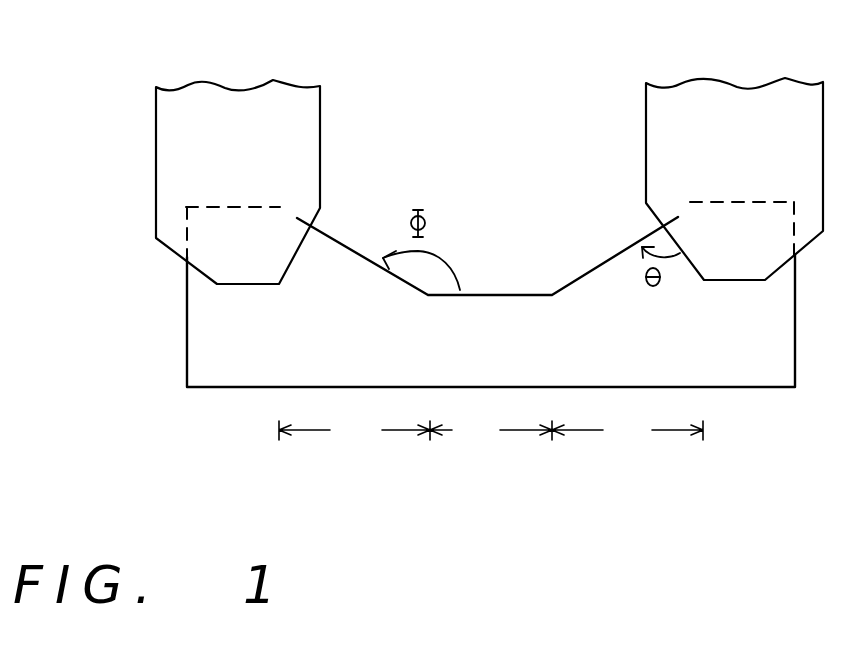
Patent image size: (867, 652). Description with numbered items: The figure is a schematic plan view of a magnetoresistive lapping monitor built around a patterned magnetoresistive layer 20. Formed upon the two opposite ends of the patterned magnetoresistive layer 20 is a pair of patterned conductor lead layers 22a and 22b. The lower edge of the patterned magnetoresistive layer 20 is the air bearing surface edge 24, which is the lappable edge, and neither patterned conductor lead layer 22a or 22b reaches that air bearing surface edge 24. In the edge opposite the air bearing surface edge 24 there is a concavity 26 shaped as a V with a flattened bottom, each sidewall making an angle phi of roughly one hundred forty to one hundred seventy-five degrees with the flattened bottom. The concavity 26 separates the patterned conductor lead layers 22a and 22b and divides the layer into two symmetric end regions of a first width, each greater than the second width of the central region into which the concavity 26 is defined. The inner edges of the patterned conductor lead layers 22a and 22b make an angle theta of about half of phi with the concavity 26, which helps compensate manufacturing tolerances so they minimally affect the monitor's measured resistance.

The patterned magnetoresistive (MR) layer 20 is at (205, 355).
The patterned conductor lead layer 22a is at (236, 104).
The patterned conductor lead layer 22b is at (726, 101).
The air bearing surface (ABS) edge 24 is at (520, 395).
The concavity 26 is at (502, 265).